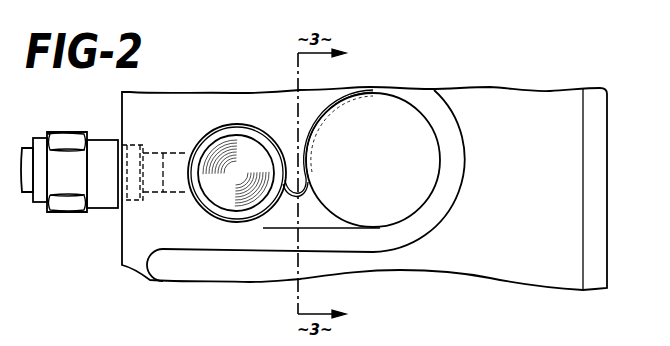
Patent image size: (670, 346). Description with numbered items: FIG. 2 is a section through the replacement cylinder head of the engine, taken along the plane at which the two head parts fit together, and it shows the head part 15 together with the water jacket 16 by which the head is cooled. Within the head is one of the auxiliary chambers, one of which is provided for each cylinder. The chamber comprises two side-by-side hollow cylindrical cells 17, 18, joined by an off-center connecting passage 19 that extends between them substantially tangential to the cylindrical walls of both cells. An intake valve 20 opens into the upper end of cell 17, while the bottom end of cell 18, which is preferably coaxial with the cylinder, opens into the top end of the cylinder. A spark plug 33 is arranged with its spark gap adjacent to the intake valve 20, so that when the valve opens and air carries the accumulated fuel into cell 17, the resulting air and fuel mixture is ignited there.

The head part 15 is at (120, 233).
The water jacket 16 is at (602, 188).
The cell 17 is at (213, 213).
The cell 18 is at (381, 117).
The connecting passage 19 is at (282, 214).
The intake valve 20 is at (240, 140).
The spark plug 33 is at (88, 118).